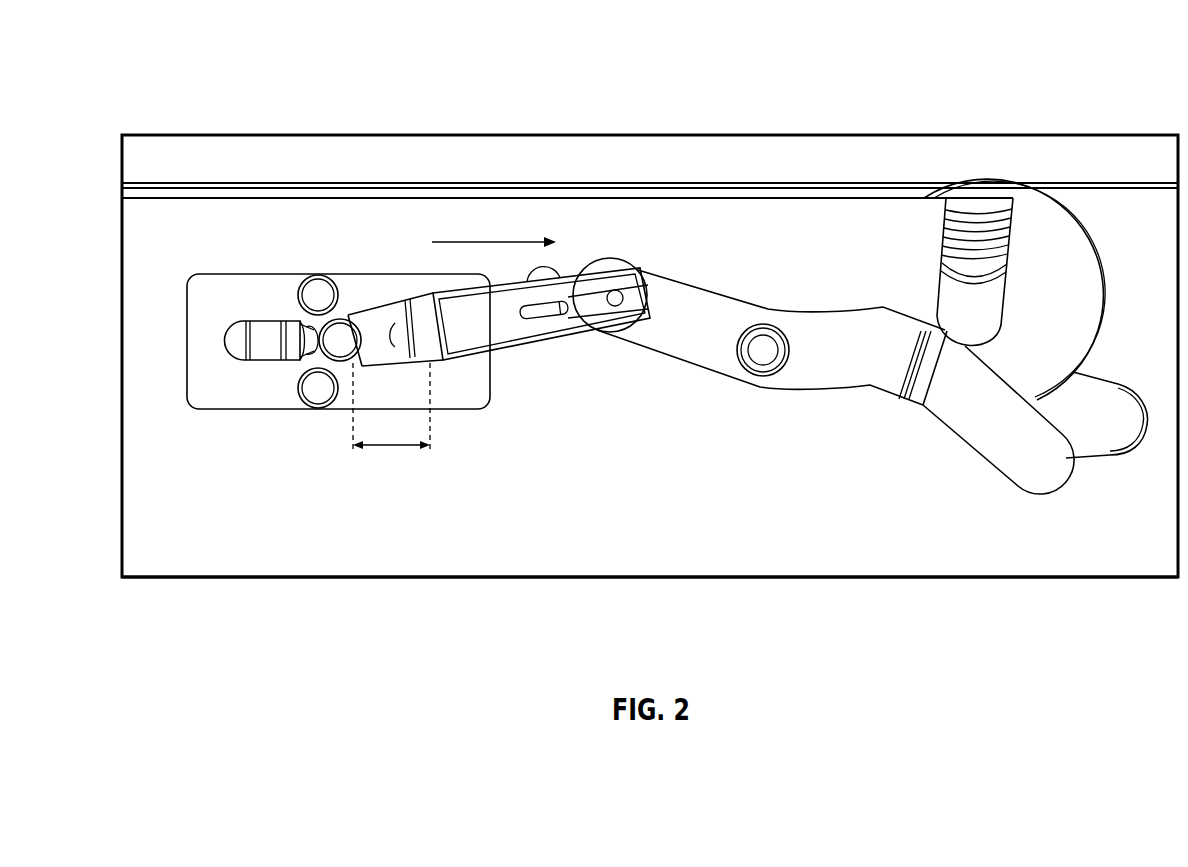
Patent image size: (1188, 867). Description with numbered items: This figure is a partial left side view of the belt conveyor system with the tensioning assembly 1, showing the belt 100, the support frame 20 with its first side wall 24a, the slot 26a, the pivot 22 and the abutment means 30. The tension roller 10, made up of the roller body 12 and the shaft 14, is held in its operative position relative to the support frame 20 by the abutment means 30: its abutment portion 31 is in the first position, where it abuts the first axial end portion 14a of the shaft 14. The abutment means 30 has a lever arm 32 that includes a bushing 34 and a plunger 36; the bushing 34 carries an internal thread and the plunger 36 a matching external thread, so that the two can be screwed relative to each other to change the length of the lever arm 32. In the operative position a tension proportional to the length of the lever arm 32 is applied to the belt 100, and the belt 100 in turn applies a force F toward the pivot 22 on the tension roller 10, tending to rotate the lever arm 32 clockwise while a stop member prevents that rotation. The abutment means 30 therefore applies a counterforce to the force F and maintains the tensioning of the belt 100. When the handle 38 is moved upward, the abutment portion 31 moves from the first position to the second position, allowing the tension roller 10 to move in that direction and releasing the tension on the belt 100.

The tensioning assembly 1 is at (589, 90).
The belt 100 is at (308, 162).
The support frame 20 is at (650, 600).
The first side wall 24a is at (463, 553).
The shaft 14 is at (312, 395).
The first axial end portion 14a is at (297, 360).
The tension roller 10 is at (225, 374).
The roller body 12 is at (263, 348).
The slot 26a is at (228, 334).
The abutment portion 31 is at (343, 322).
The abutment means 30 is at (712, 248).
The plunger 36 is at (443, 361).
The bushing 34 is at (570, 336).
The lever arm 32 is at (721, 353).
The pivot 22 is at (763, 348).
The handle 38 is at (1047, 470).